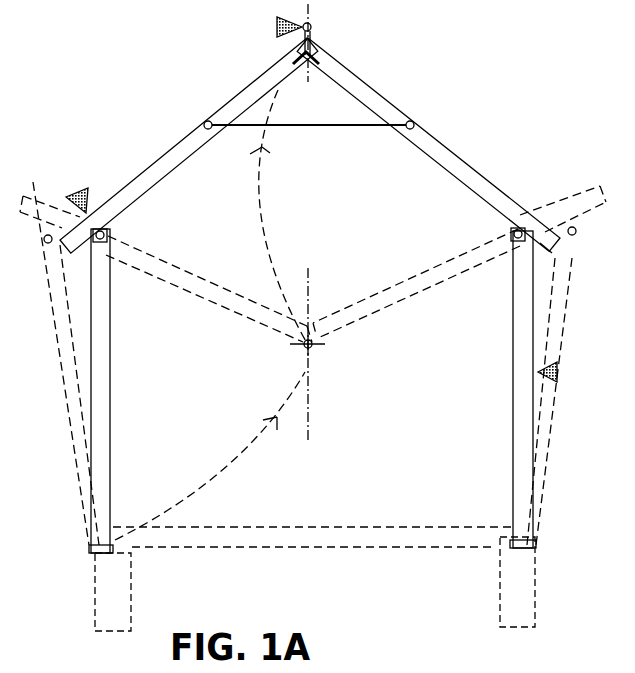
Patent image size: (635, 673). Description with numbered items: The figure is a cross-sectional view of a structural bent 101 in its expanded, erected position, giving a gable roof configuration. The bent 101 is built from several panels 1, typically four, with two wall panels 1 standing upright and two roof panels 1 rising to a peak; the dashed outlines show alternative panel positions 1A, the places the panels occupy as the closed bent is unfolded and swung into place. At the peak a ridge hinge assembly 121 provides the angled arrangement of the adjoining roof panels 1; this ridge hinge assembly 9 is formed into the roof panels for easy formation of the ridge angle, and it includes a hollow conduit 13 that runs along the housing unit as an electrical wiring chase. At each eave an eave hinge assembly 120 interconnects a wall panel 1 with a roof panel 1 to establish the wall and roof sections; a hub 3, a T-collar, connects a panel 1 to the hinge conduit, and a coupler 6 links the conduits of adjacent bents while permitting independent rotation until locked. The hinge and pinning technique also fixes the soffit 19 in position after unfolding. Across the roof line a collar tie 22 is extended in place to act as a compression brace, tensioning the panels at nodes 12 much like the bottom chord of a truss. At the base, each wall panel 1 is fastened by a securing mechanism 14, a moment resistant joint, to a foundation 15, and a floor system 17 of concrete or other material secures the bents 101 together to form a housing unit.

The panel 1 is at (162, 156).
The panel alternative position 1A is at (192, 283).
The hub 3 is at (309, 233).
The coupler 6 is at (112, 233).
The ridge hinge assembly 9 is at (312, 27).
The node 12 is at (206, 122).
The conduit 13 is at (308, 66).
The securing mechanism 14 is at (89, 545).
The foundation 15 is at (110, 598).
The floor system 17 is at (313, 530).
The soffit 19 is at (552, 253).
The collar tie 22 is at (308, 128).
The bent 101 is at (558, 372).
The eave hinge assembly 120 is at (77, 196).
The ridge hinge assembly 121 is at (277, 26).